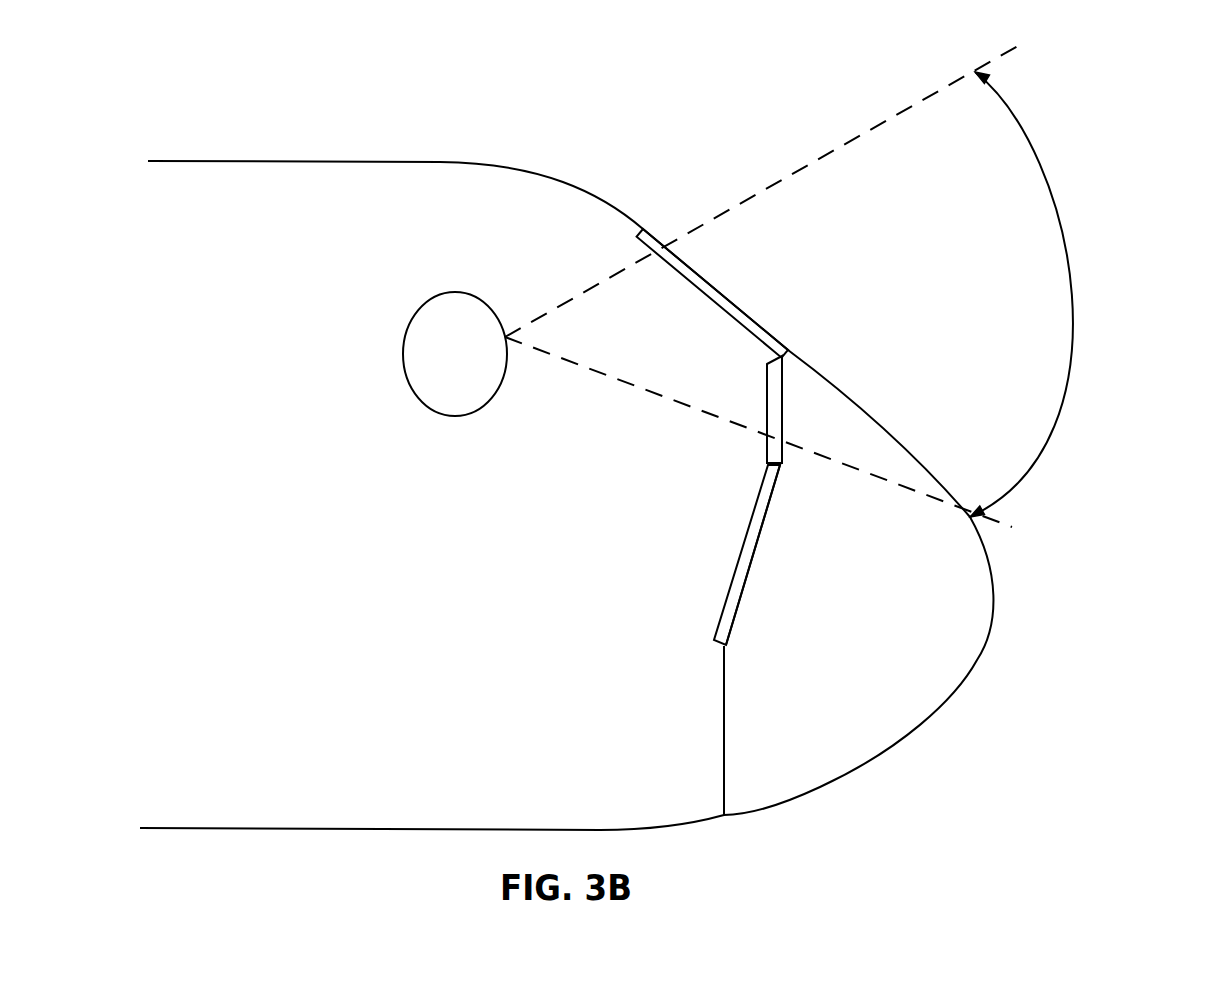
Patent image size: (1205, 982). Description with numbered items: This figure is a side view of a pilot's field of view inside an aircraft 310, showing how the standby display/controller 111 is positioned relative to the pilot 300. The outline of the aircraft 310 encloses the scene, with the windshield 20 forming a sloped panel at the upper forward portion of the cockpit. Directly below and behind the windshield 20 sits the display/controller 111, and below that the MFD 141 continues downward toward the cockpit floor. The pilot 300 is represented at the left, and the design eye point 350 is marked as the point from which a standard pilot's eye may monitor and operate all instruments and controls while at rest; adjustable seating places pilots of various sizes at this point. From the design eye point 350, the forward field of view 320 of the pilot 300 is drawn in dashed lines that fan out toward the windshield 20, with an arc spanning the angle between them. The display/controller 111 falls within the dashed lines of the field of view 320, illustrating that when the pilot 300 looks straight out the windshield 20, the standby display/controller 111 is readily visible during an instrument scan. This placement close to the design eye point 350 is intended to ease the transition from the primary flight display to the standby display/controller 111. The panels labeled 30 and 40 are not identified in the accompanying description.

The aircraft 310 is at (308, 161).
The pilot 300 is at (404, 352).
The design eye point 350 is at (505, 337).
The forward field of view 320 is at (1075, 250).
The windshield 20 is at (720, 292).
The second panel 30 is at (812, 416).
The display/controller 111 is at (782, 400).
The third panel 40 is at (792, 536).
The MFD 141 is at (753, 558).